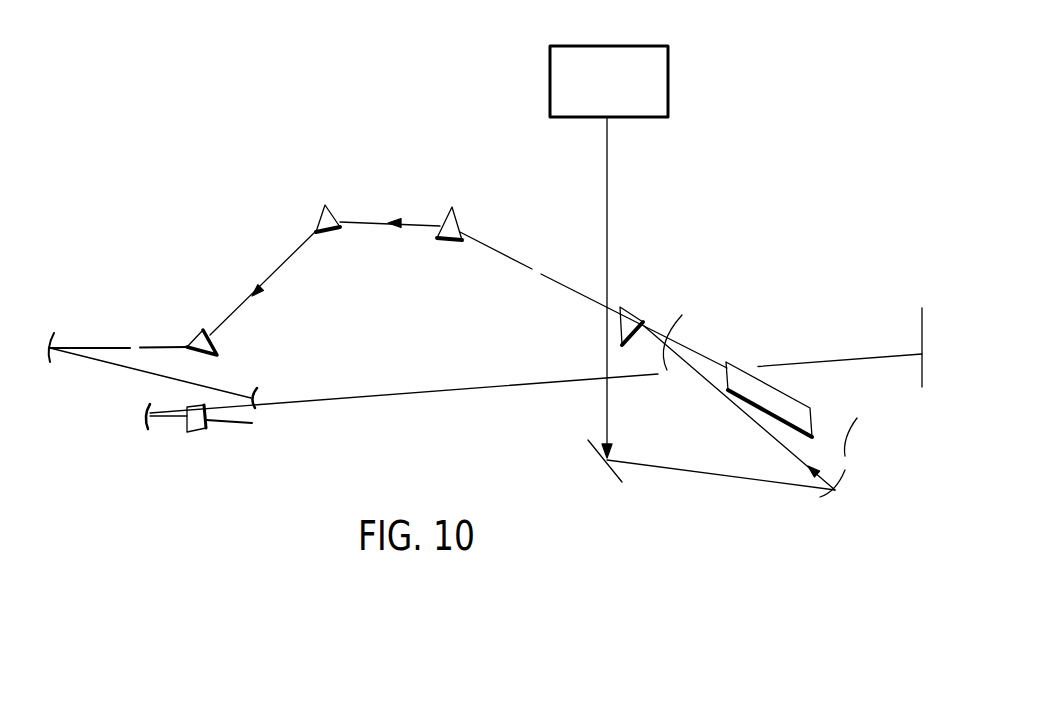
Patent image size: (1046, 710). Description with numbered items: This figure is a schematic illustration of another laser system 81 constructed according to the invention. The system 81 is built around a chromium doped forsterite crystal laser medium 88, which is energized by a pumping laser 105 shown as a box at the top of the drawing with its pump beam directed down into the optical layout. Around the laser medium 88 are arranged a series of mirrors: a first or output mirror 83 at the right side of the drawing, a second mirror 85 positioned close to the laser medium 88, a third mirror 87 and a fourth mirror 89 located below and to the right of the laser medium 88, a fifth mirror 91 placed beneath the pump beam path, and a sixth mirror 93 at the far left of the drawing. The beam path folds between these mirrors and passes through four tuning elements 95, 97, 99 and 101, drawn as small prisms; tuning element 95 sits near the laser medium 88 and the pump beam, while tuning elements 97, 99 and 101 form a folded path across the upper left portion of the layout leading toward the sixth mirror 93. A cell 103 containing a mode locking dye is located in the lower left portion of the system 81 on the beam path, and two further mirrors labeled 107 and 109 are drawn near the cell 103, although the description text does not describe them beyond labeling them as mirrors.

The laser system 81 is at (289, 528).
The first or output mirror 83 is at (918, 320).
The second mirror 85 is at (678, 318).
The third mirror 87 is at (850, 447).
The chromium doped forsterite crystal laser medium 88 is at (745, 372).
The fourth mirror 89 is at (818, 500).
The fifth mirror 91 is at (612, 476).
The sixth mirror 93 is at (50, 350).
The tuning element 95 is at (638, 316).
The tuning element 97 is at (456, 222).
The tuning element 99 is at (330, 207).
The tuning element 101 is at (198, 324).
The cell containing a mode locking dye 103 is at (195, 433).
The pumping laser 105 is at (669, 102).
The mirror 107 is at (144, 423).
The mirror 109 is at (258, 393).